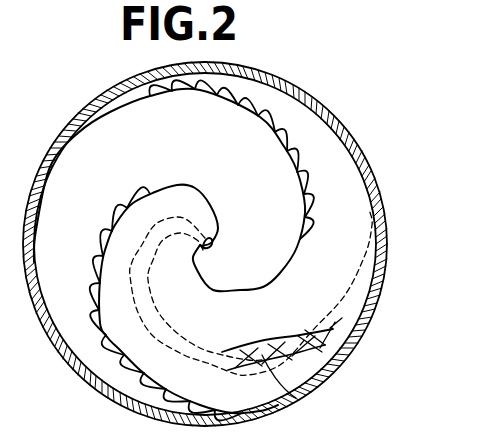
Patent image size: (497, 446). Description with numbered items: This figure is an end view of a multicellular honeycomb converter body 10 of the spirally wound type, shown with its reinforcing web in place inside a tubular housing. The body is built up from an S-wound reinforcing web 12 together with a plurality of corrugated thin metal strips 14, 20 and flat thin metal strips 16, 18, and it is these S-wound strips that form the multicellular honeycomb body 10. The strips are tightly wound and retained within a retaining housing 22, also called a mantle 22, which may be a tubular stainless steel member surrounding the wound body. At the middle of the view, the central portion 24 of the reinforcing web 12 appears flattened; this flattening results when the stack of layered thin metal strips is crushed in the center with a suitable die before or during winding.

The multicellular honeycomb converter body 10 is at (392, 134).
The reinforcing web 12 is at (303, 206).
The corrugated thin metal strip 14 is at (260, 354).
The flat thin metal strip 16 is at (285, 348).
The flat thin metal strip 18 is at (278, 358).
The corrugated thin metal strip 20 is at (322, 355).
The retaining housing 22 is at (323, 110).
The central portion 24 is at (218, 242).